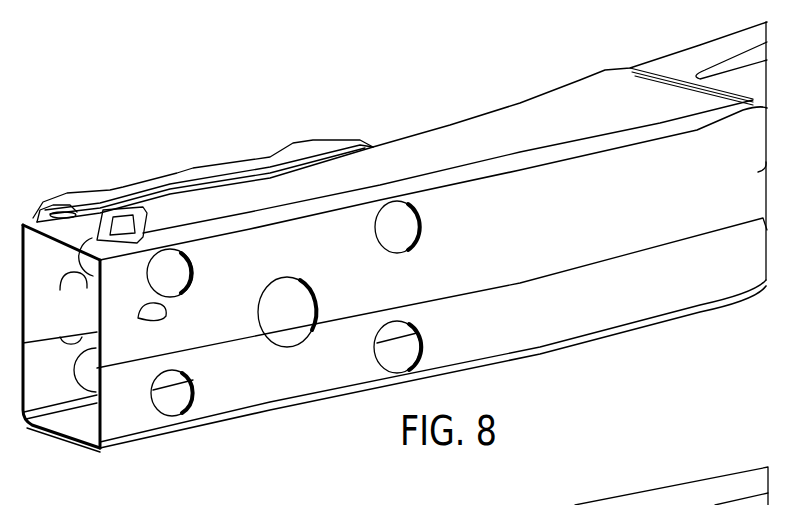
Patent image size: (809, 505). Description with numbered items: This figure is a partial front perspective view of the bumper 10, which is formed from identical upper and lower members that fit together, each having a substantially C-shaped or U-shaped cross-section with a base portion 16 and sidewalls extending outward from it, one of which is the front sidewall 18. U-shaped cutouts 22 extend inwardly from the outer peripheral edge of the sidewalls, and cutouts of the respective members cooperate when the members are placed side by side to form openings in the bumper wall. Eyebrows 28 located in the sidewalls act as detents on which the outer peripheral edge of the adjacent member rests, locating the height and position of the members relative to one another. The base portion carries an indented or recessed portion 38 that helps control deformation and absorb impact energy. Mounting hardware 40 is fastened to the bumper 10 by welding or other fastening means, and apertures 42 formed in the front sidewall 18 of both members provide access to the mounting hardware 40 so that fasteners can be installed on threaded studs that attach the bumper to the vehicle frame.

The bumper 10 is at (398, 97).
The base portion 16 is at (450, 143).
The front sidewall 18 is at (497, 210).
The U-shaped cutout 22 is at (293, 328).
The eyebrow 28 is at (160, 322).
The recessed portion 38 is at (613, 497).
The mounting hardware 40 is at (218, 163).
The aperture 42 is at (397, 330).